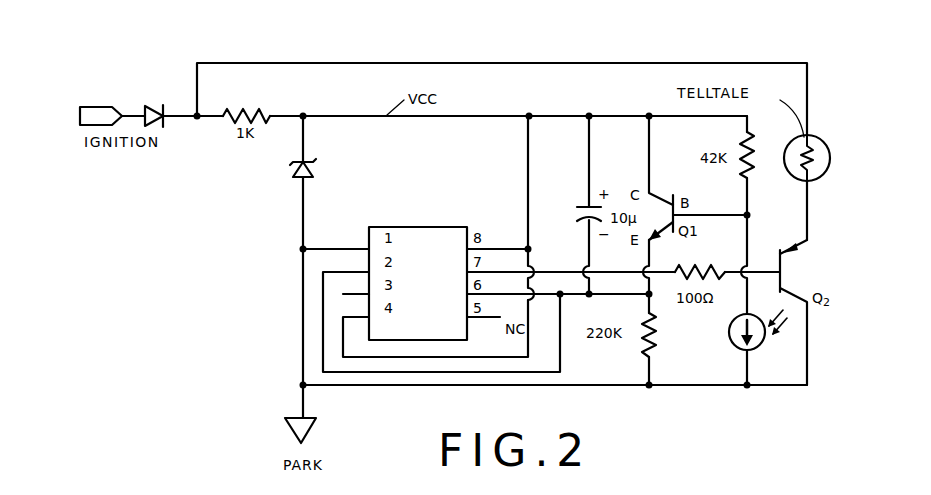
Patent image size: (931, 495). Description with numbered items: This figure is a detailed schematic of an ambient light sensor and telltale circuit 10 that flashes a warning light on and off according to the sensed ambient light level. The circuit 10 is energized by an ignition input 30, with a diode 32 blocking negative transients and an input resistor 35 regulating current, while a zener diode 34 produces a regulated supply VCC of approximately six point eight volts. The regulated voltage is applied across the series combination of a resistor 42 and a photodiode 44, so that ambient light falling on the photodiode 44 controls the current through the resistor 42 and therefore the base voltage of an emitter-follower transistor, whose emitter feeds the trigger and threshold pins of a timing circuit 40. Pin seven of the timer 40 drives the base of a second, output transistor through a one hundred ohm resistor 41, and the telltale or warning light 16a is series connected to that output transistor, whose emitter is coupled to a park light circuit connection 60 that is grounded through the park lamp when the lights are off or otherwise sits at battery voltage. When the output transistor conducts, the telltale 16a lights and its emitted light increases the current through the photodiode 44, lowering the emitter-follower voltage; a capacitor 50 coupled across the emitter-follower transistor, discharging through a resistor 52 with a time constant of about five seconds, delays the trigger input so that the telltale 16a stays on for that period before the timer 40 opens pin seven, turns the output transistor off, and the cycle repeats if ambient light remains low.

The ambient light sensor and telltale circuit 10 is at (505, 88).
The ignition input 30 is at (132, 112).
The diode 32 is at (152, 104).
The input resistor 35 is at (258, 112).
The zener diode 34 is at (297, 172).
The timing circuit 40 is at (431, 294).
The capacitor 50 is at (584, 204).
The resistor 42 is at (757, 165).
The telltale or warning light 16a is at (820, 141).
The 100 ohm resistor 41 is at (688, 266).
The photodiode 44 is at (729, 340).
The resistor 52 is at (636, 358).
The park light circuit connection 60 is at (283, 427).